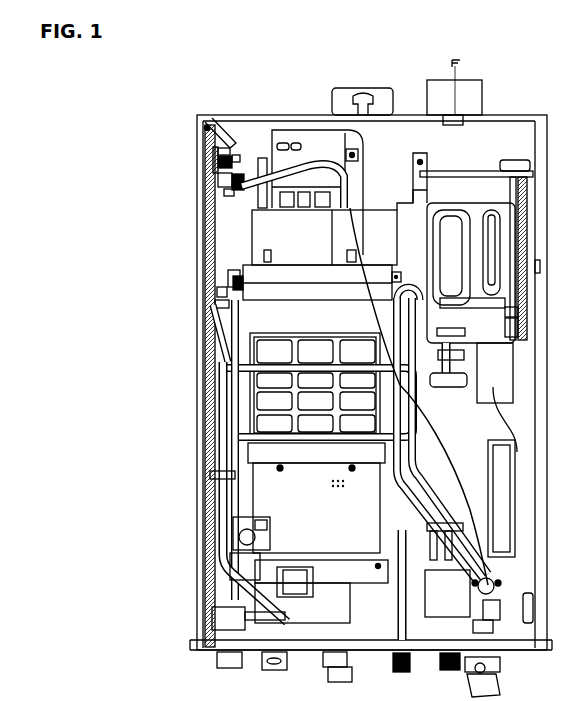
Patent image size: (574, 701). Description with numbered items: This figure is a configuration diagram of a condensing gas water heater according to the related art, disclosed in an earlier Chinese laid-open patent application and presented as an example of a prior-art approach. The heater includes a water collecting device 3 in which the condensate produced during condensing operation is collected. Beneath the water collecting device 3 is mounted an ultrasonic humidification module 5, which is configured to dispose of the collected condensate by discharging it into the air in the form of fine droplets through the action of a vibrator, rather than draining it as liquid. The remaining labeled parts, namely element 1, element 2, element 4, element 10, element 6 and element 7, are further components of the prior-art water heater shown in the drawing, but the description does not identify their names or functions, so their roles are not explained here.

The igniter 1 is at (233, 167).
The water tank 2 is at (442, 218).
The water collecting device 3 is at (392, 272).
The water inlet fitting 4 is at (505, 325).
The pump 10 is at (493, 343).
The ultrasonic humidification module 5 is at (430, 405).
The control unit 6 is at (495, 500).
The gas inlet 7 is at (352, 647).